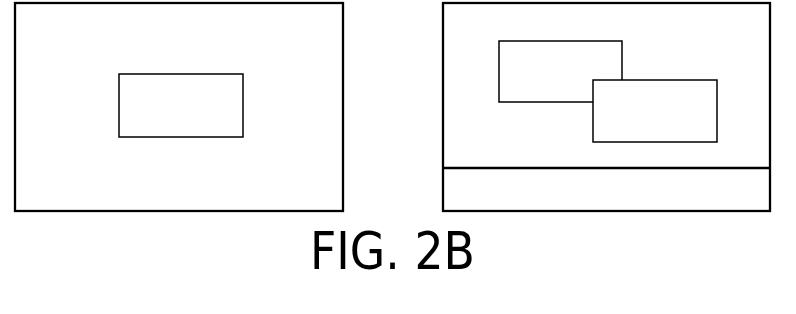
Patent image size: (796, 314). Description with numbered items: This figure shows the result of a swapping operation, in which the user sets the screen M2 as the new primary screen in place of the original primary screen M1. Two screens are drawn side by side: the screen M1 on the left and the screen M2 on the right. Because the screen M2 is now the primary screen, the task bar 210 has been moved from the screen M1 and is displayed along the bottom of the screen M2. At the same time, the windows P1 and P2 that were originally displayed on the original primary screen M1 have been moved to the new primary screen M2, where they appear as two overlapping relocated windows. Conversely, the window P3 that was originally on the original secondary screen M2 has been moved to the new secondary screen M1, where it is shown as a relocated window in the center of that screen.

The task bar 210 is at (692, 206).
The screen M1 is at (179, 107).
The screen M2 is at (606, 107).
The window P1 is at (560, 71).
The window P2 is at (655, 111).
The window P3 is at (181, 105).